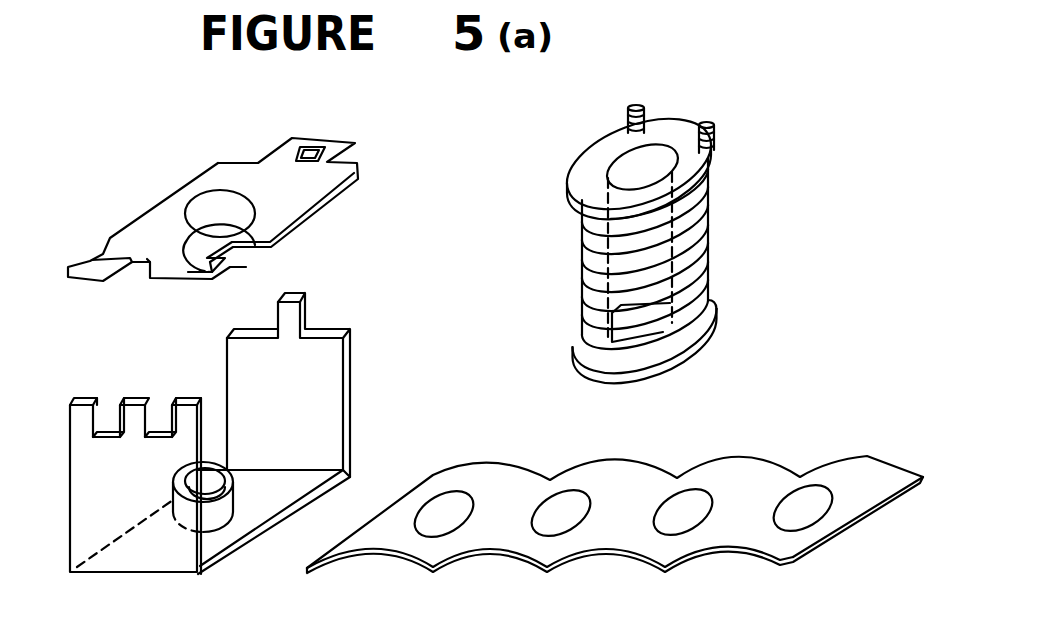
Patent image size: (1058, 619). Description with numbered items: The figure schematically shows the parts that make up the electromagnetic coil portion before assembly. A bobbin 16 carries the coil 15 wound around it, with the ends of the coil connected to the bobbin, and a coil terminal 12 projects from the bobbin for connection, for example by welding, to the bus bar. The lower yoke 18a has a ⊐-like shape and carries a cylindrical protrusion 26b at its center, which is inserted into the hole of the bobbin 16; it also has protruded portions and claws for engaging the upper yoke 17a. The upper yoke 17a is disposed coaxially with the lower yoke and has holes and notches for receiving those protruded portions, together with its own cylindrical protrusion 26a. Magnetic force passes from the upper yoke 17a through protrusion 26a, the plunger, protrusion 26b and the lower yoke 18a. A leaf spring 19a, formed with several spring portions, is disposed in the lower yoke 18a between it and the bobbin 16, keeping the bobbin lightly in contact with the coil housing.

The coil terminal 12 is at (715, 128).
The coil 15 is at (708, 213).
The bobbin 16 is at (582, 173).
The upper yoke 17a is at (358, 170).
The lower yoke 18a is at (343, 397).
The leaf spring 19a is at (767, 465).
The cylindrical protrusion 26a is at (205, 208).
The cylindrical protrusion 26b is at (217, 462).